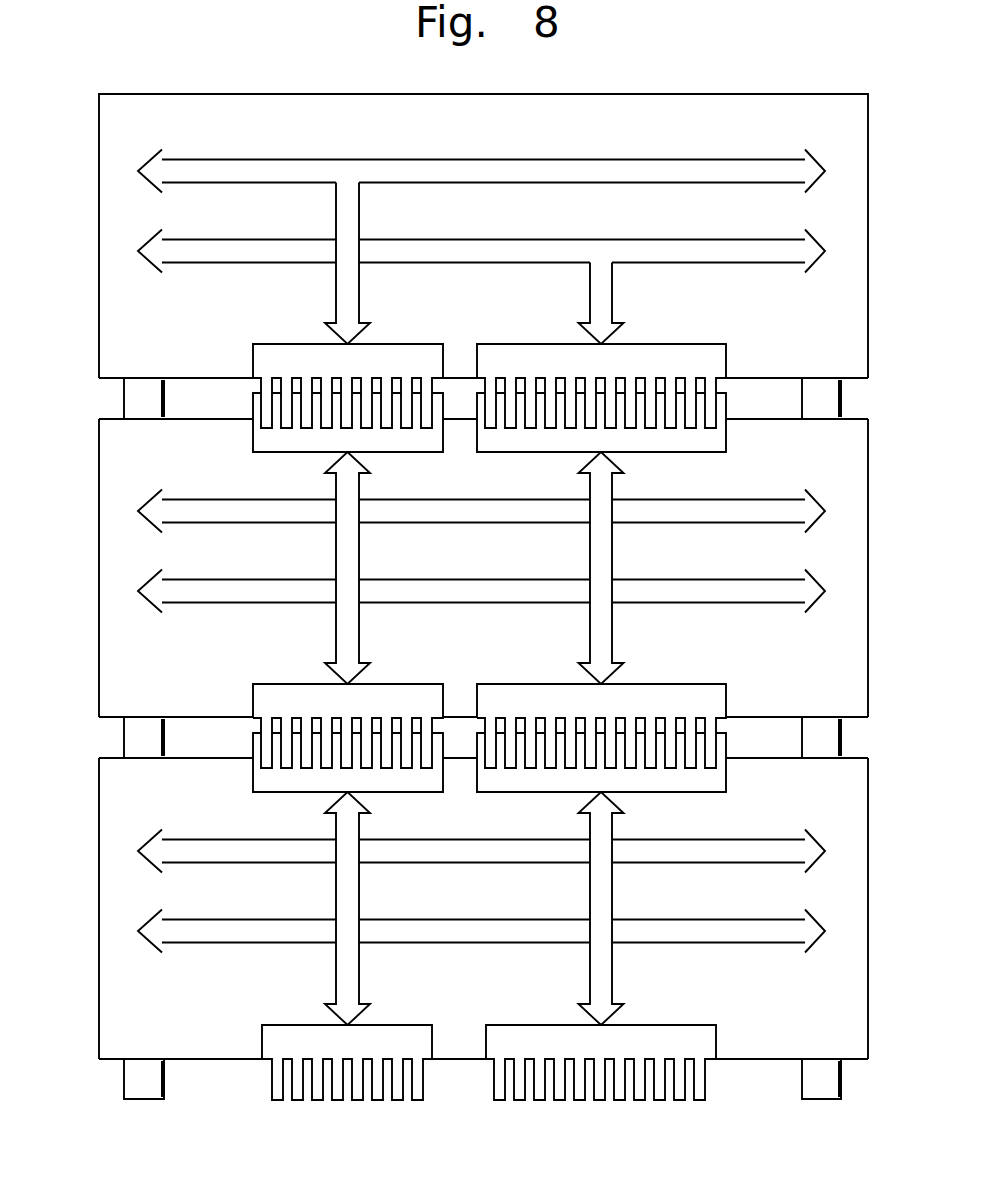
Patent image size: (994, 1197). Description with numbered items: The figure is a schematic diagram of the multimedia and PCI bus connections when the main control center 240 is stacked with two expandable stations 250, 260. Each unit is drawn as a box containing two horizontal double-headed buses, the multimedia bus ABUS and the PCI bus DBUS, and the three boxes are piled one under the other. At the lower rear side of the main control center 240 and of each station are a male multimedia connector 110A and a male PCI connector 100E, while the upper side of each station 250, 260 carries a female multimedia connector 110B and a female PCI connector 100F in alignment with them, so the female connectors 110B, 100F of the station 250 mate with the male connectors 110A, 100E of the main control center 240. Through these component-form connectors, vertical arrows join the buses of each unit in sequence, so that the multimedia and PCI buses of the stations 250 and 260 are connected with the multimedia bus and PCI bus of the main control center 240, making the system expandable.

The main control center 240 is at (99, 263).
The station 250 is at (99, 585).
The station 260 is at (99, 950).
The male connector 110A is at (387, 343).
The female connector 110B is at (253, 440).
The male connector 100E is at (663, 343).
The female connector 100F is at (727, 440).